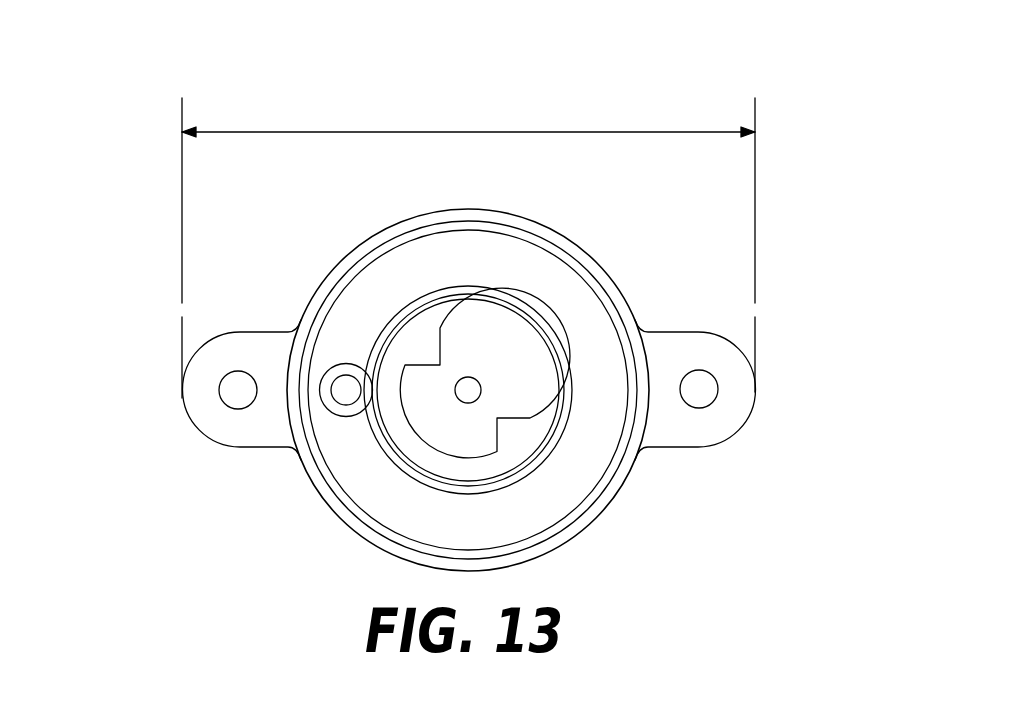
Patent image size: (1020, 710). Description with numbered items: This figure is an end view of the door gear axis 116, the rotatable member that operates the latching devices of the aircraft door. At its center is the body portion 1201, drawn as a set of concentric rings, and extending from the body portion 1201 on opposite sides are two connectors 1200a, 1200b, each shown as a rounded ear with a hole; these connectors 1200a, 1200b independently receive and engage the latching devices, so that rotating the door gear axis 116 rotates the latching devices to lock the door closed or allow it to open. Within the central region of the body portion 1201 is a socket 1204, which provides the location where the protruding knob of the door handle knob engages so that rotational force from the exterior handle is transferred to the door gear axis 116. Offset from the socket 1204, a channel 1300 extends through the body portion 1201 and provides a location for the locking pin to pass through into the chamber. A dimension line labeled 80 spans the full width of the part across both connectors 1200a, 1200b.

The door gear axis 116 is at (110, 217).
The overall width dimension 80 is at (470, 131).
The body portion 1201 is at (547, 265).
The socket 1204 is at (497, 367).
The connector 1200a is at (195, 398).
The connector 1200b is at (750, 390).
The channel 1300 is at (343, 392).